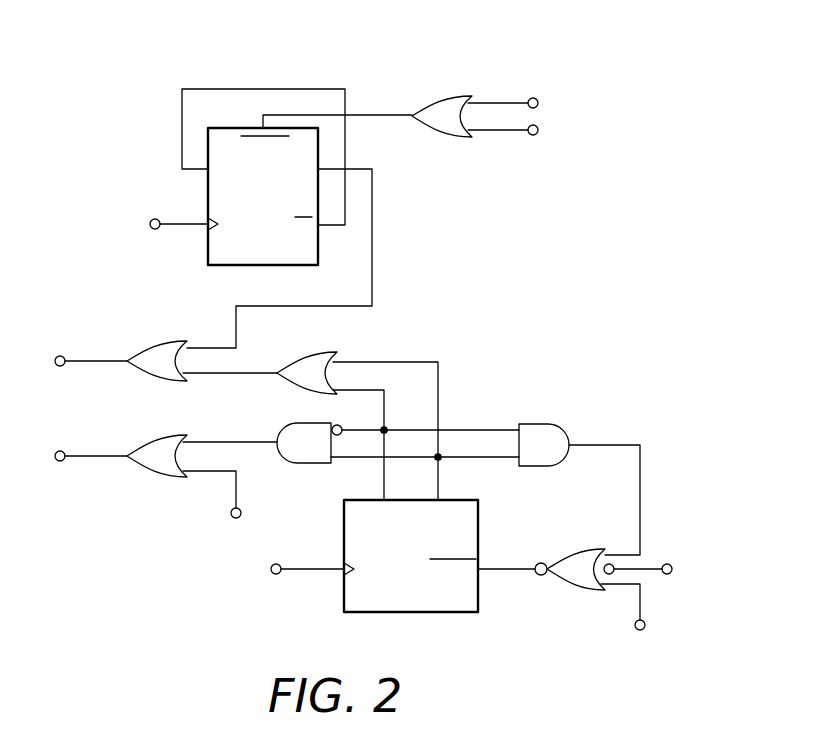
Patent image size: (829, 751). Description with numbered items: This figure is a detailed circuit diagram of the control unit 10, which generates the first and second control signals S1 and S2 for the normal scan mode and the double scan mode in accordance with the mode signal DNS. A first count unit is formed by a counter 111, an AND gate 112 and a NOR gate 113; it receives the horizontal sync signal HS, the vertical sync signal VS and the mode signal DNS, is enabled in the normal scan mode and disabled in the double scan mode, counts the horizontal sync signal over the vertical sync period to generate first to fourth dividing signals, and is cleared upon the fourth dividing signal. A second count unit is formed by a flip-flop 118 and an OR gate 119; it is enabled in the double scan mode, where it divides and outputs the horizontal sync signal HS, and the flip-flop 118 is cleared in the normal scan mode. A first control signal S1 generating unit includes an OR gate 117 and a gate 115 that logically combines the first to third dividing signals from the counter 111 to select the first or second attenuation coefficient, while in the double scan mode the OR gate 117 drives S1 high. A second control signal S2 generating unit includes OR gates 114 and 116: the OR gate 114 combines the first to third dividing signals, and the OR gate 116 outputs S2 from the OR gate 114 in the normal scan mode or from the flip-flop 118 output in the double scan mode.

The control unit 10 is at (643, 104).
The counter 111 is at (478, 525).
The AND gate 112 is at (535, 423).
The NOR gate 113 is at (580, 548).
The OR gate 114 is at (299, 354).
The AND gate 115 is at (293, 422).
The OR gate 116 is at (166, 340).
The OR gate 117 is at (168, 434).
The flip-flop 118 is at (208, 252).
The OR gate 119 is at (450, 95).